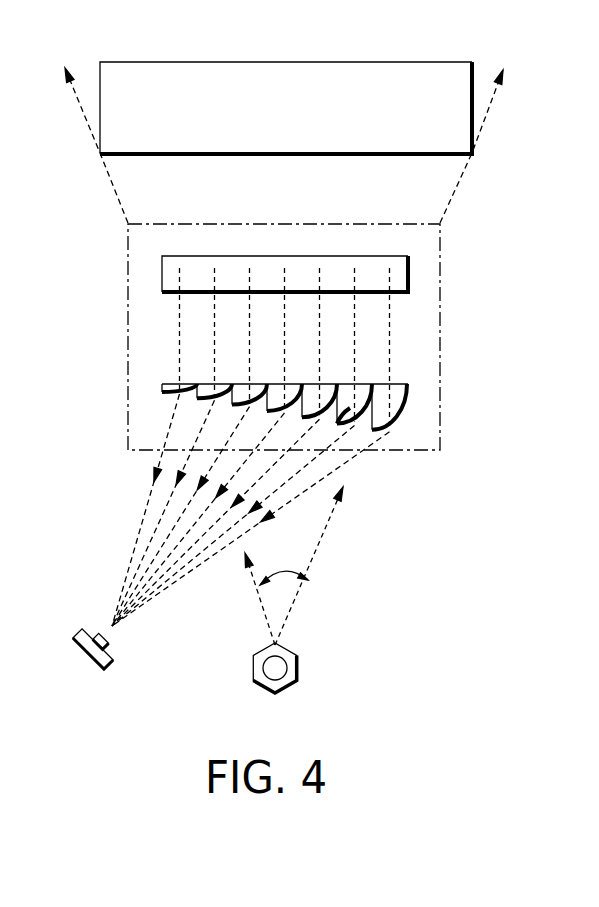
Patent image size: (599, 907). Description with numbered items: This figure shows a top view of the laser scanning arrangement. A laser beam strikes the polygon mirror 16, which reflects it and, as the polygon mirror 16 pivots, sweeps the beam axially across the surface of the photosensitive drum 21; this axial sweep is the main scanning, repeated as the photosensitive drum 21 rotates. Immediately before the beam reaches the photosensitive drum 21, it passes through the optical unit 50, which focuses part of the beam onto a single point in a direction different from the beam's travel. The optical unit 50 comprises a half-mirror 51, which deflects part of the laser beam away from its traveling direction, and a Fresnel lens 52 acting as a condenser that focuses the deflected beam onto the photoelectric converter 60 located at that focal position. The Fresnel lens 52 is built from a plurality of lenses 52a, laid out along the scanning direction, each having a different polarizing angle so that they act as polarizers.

The photosensitive drum 21 is at (279, 62).
The optical unit 50 is at (127, 316).
The half-mirror 51 is at (409, 270).
The Fresnel lens 52 is at (411, 382).
The lenses 52a is at (350, 408).
The photoelectric converter 60 is at (85, 653).
The polygon mirror 16 is at (298, 668).